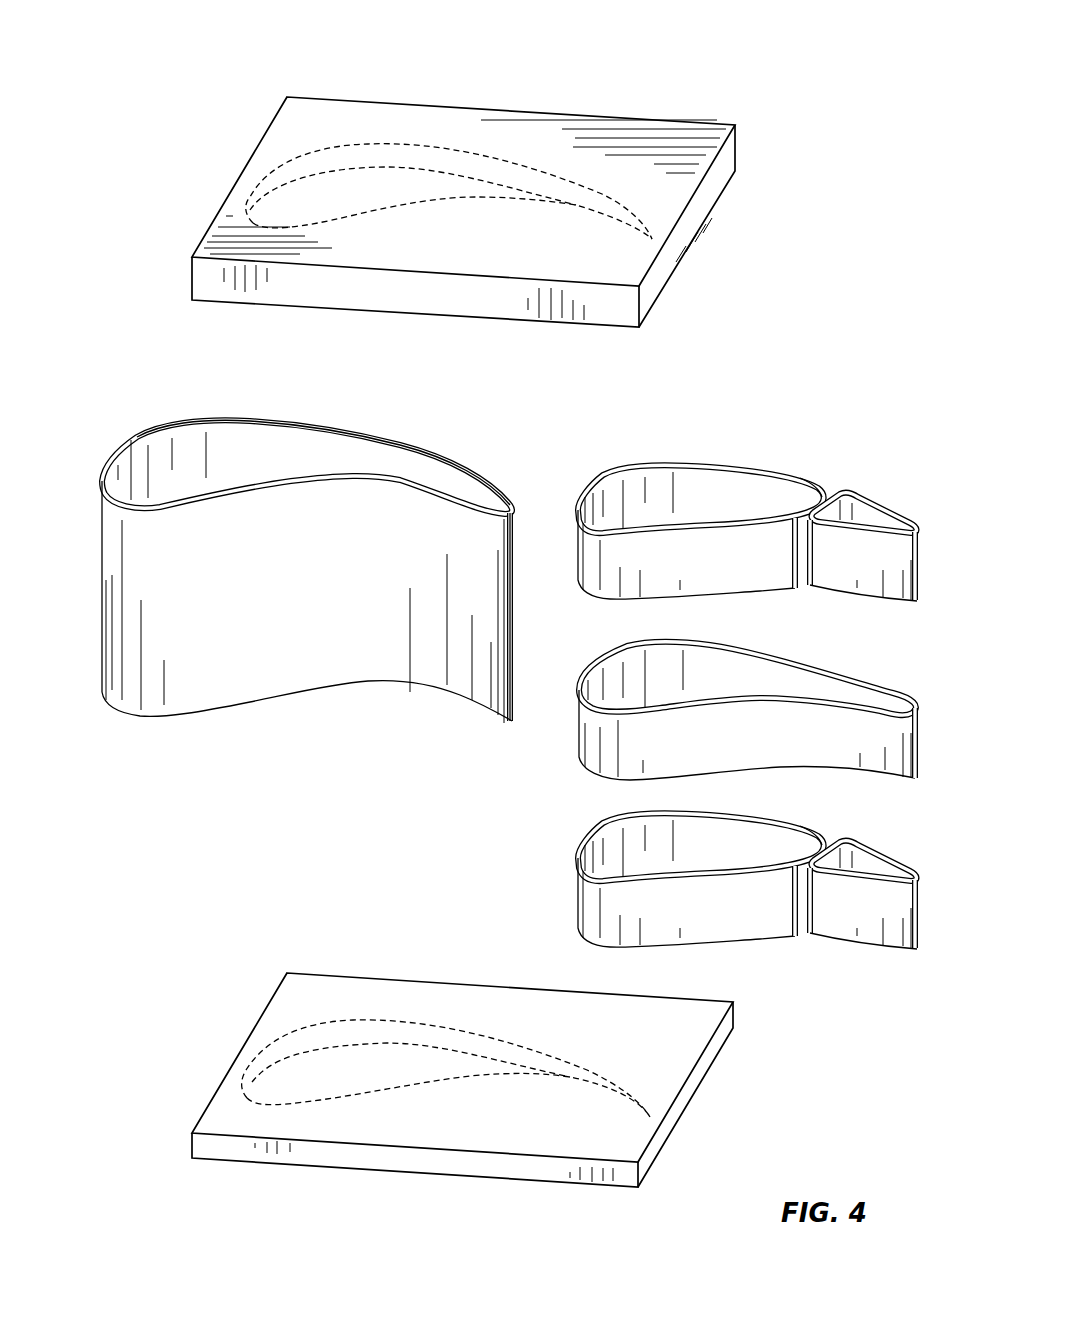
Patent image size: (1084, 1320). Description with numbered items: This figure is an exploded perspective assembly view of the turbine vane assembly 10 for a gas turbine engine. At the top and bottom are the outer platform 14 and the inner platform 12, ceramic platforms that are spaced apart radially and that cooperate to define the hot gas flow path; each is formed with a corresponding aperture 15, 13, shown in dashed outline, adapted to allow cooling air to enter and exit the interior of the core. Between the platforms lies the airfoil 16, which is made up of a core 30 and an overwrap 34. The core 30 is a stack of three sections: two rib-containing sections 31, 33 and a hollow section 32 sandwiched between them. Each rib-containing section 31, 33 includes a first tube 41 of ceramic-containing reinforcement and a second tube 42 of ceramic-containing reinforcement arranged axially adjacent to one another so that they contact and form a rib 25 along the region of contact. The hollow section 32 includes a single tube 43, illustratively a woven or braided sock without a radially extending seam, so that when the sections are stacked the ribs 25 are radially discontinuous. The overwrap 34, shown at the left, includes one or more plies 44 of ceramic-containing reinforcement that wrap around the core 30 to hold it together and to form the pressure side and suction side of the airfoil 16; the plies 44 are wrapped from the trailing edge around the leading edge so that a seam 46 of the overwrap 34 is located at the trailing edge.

The turbine vane assembly 10 is at (758, 115).
The inner platform 12 is at (238, 1118).
The aperture 13 is at (312, 1082).
The outer platform 14 is at (285, 147).
The aperture 15 is at (382, 194).
The airfoil 16 is at (141, 381).
The radially-discontinuous rib 25 is at (813, 498).
The core 30 is at (797, 437).
The rib-containing section 31 is at (605, 570).
The hollow section 32 is at (605, 748).
The rib-containing section 33 is at (600, 905).
The overwrap 34 is at (412, 415).
The first tube 41 is at (717, 484).
The second tube 42 is at (880, 512).
The tube 43 is at (770, 657).
The plies 44 is at (262, 442).
The seam 46 is at (518, 644).